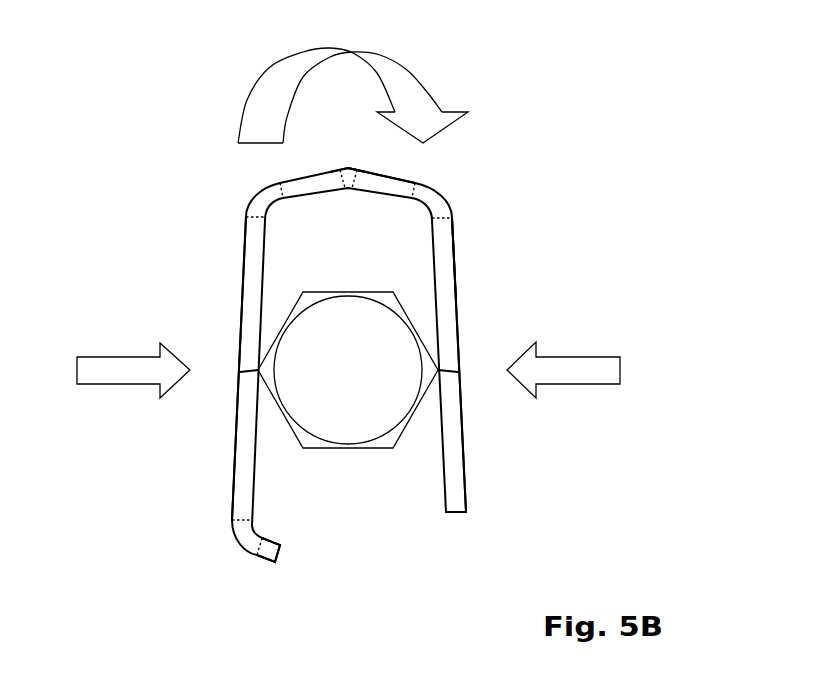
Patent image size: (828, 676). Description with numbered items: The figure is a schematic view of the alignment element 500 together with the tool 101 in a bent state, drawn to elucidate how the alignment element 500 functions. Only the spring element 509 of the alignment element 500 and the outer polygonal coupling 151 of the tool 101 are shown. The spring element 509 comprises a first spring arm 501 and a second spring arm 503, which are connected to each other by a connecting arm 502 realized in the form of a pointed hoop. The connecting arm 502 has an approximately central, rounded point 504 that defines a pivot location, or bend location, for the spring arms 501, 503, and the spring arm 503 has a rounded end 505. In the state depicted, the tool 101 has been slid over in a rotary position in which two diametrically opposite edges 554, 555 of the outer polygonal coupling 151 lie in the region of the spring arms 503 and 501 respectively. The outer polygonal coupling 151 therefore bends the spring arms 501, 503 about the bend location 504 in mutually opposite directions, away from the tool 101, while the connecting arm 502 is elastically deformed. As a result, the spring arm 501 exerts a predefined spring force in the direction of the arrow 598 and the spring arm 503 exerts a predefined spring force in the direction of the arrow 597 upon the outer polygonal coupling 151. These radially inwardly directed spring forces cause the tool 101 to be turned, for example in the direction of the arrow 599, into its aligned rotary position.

The alignment element 500 is at (490, 505).
The first spring arm 501 is at (475, 460).
The connecting arm 502 is at (405, 164).
The second spring arm 503 is at (228, 456).
The rounded point 504 is at (348, 160).
The rounded end 505 is at (264, 568).
The spring element 509 is at (445, 253).
The outer polygonal coupling 151 is at (414, 306).
The tool 101 is at (347, 413).
The edge of the outer polygonal coupling 554 is at (246, 372).
The edge of the outer polygonal coupling 555 is at (450, 370).
The arrow 597 is at (118, 362).
The arrow 598 is at (578, 363).
The arrow 599 is at (417, 78).